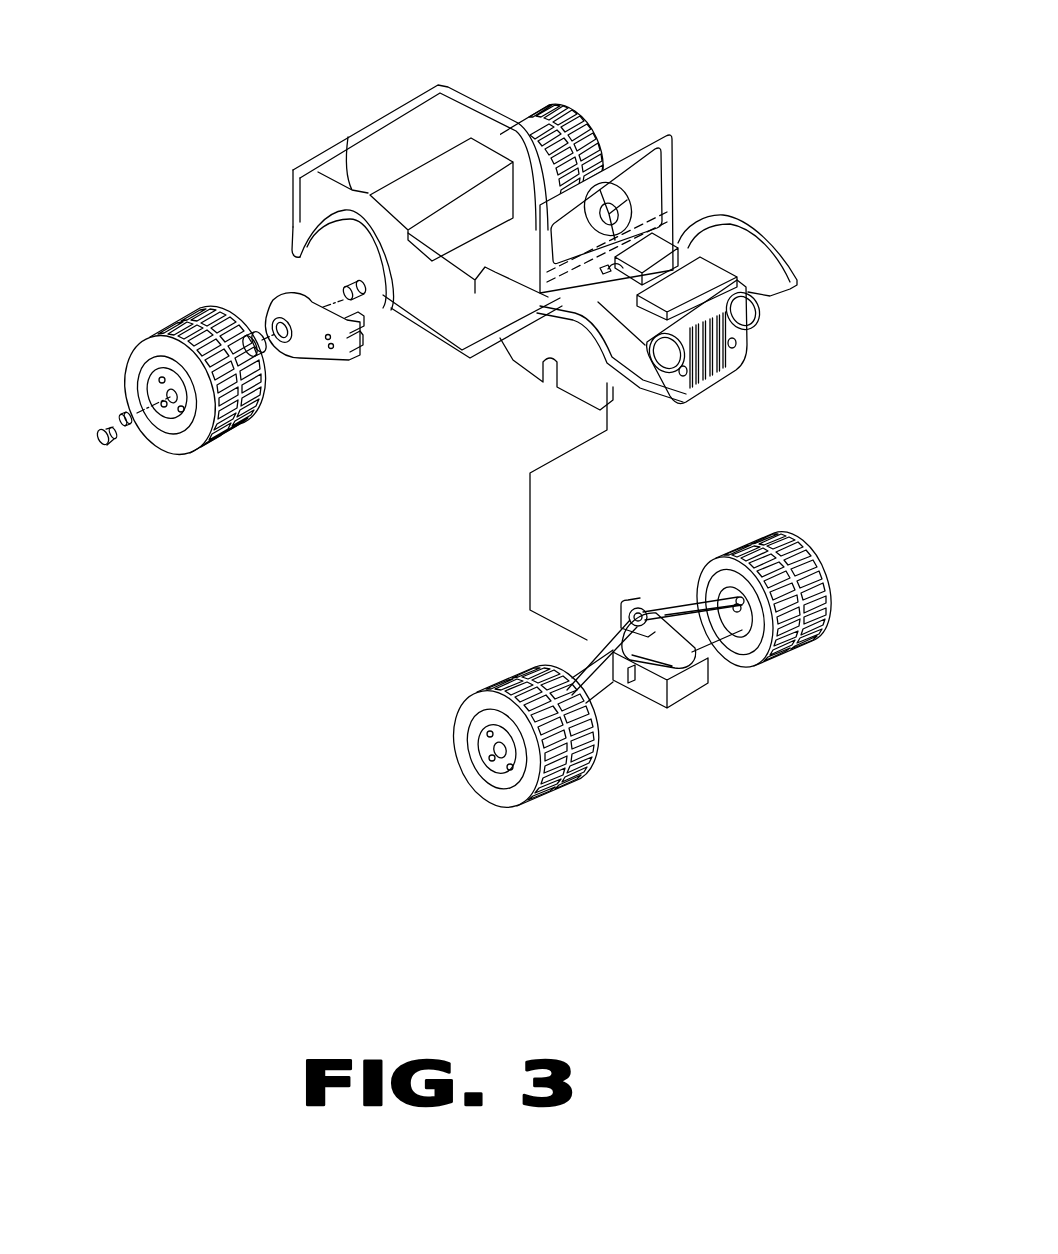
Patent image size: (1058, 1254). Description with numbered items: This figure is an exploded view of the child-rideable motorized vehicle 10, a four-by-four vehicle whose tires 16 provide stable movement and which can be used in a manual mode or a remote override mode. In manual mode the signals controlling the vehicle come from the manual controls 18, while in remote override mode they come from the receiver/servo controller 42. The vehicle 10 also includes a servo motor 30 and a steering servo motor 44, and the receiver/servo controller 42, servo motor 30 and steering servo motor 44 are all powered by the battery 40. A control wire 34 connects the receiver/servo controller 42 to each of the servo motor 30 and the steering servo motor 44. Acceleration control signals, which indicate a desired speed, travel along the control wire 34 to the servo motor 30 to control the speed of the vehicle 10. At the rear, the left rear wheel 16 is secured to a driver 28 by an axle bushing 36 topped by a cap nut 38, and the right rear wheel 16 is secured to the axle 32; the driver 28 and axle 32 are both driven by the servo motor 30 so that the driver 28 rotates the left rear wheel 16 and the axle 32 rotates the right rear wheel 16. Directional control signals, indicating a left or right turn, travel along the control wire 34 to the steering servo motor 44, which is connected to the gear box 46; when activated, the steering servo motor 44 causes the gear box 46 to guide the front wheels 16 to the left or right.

The child-rideable motorized vehicle 10 is at (547, 120).
The tires 16 is at (173, 320).
The manual controls 18 is at (610, 197).
The driver 28 is at (253, 337).
The servo motor 30 is at (287, 363).
The axle 32 is at (297, 233).
The control wire 34 is at (648, 487).
The axle bushing 36 is at (122, 418).
The cap nut 38 is at (106, 437).
The battery 40 is at (657, 247).
The receiver/servo controller 42 is at (637, 612).
The steering servo motor 44 is at (717, 660).
The gear box 46 is at (683, 700).